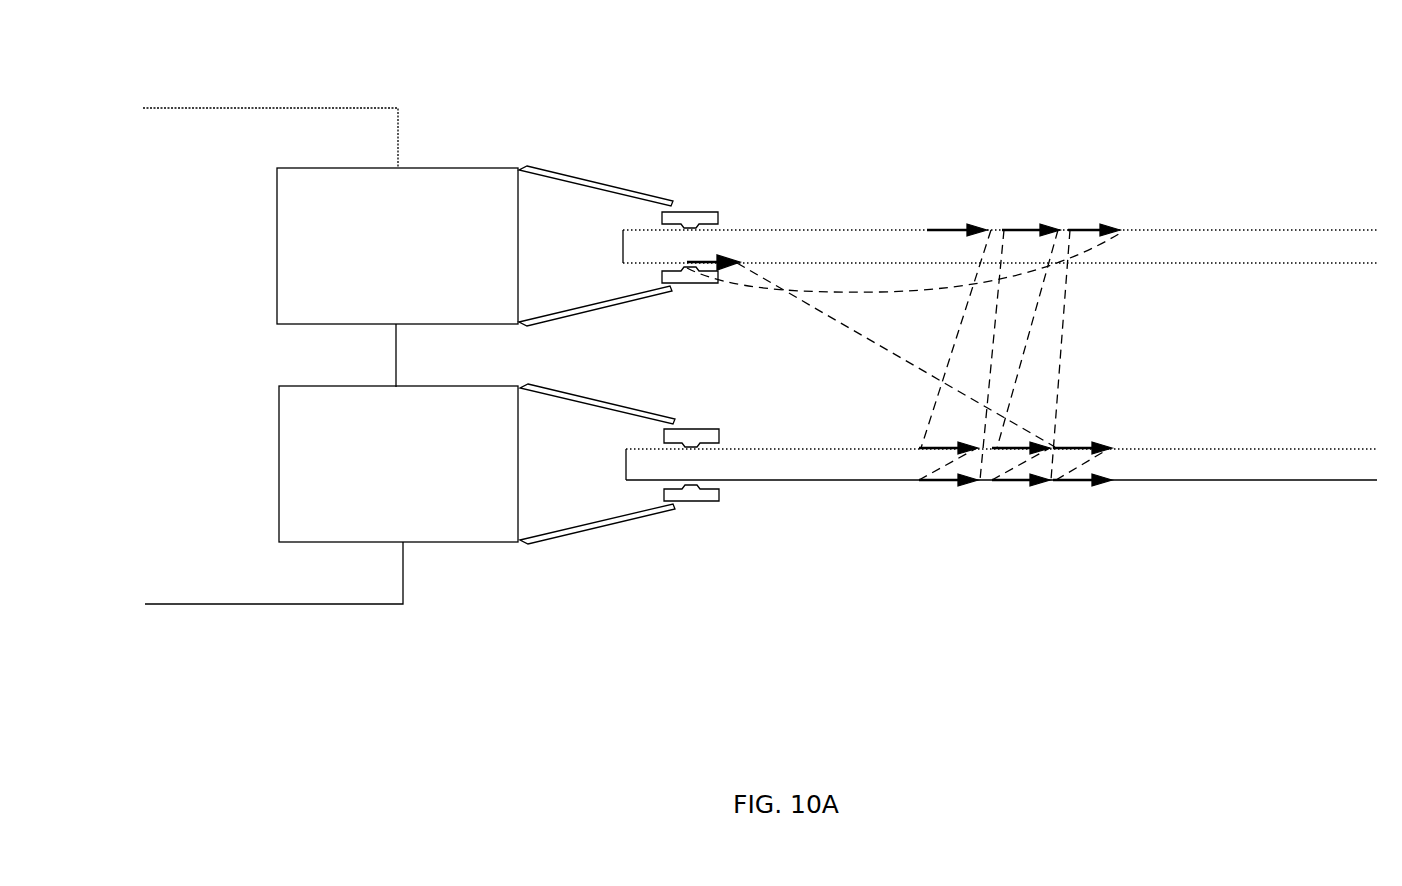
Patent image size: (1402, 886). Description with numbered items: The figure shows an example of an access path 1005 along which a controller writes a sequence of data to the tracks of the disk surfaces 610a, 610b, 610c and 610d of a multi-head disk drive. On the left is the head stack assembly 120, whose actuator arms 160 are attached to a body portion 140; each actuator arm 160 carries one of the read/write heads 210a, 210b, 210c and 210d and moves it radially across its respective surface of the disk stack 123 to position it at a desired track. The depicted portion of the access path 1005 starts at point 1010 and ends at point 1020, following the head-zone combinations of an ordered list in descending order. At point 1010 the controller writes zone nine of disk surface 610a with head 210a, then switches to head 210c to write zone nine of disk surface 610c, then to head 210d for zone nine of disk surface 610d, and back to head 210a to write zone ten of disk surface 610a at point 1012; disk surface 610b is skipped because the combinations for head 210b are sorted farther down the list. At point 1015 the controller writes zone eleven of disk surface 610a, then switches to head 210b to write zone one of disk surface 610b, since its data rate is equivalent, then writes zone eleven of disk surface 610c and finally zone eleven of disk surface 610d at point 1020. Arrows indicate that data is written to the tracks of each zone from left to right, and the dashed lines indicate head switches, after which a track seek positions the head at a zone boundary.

The body portion 140 is at (310, 104).
The head stack assembly 120 is at (667, 104).
The disk stack 123 is at (1157, 148).
The actuator arm 160 is at (423, 168).
The head 210a is at (725, 218).
The head 210b is at (662, 275).
The head 210c is at (660, 431).
The head 210d is at (722, 495).
The disk surface 610a is at (1232, 228).
The disk surface 610b is at (1232, 265).
The disk surface 610c is at (1247, 446).
The disk surface 610d is at (1247, 482).
The access path 1005 is at (1019, 199).
The point 1010 is at (927, 228).
The point 1012 is at (1002, 228).
The point 1015 is at (1068, 228).
The point 1020 is at (1108, 482).